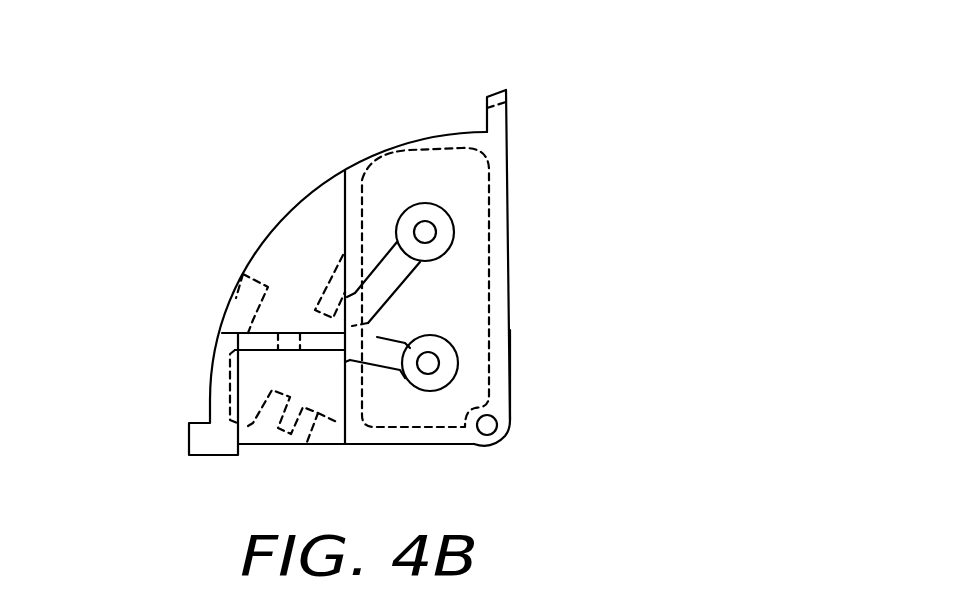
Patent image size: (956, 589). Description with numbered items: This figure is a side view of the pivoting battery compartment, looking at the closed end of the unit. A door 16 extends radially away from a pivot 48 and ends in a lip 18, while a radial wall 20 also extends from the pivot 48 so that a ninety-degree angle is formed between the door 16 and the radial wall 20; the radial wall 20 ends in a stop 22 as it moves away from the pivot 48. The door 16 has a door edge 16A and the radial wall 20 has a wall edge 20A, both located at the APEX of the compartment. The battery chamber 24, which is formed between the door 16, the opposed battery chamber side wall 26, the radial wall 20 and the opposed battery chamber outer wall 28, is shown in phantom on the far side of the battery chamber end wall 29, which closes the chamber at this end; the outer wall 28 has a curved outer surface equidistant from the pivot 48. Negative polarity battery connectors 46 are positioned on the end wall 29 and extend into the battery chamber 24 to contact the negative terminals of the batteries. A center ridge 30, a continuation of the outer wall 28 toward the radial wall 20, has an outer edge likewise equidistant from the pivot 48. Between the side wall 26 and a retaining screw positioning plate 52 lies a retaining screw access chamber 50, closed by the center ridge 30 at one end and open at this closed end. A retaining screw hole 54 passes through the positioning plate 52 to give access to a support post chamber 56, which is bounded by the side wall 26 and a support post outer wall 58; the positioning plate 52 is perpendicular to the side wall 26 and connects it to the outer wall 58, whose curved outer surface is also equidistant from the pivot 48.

The door 16 is at (509, 233).
The door edge 16A is at (511, 407).
The lip 18 is at (508, 117).
The radial wall 20 is at (398, 445).
The wall edge 20A is at (474, 445).
The stop 22 is at (200, 442).
The battery chamber 24 is at (483, 158).
The battery chamber side wall 26 is at (352, 187).
The battery chamber outer wall 28 is at (405, 148).
The battery chamber end wall 29 is at (467, 288).
The center ridge 30 is at (328, 180).
The negative polarity battery connectors 46 is at (437, 233).
The pivot 48 is at (496, 426).
The retaining screw access chamber 50 is at (303, 227).
The retaining screw positioning plate 52 is at (258, 334).
The retaining screw hole 54 is at (288, 333).
The support post chamber 56 is at (277, 367).
The support post outer wall 58 is at (215, 400).
The apex APEX is at (497, 442).